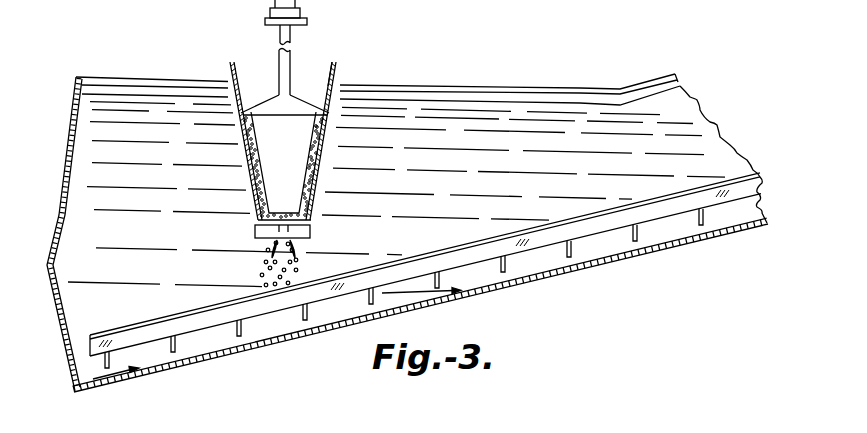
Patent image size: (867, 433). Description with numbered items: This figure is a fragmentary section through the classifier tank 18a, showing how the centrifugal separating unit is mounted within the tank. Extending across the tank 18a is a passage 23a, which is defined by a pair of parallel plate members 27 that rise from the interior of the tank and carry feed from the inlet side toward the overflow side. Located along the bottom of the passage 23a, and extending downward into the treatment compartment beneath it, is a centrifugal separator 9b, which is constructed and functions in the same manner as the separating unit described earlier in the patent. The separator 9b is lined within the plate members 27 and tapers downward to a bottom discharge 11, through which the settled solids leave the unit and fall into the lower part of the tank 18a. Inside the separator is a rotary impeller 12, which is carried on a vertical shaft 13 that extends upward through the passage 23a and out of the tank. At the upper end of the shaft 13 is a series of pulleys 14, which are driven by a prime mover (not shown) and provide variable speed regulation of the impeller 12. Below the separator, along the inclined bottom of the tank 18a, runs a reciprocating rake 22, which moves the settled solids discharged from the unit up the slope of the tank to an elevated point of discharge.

The centrifugal separator 9b is at (321, 160).
The bottom discharge 11 is at (312, 234).
The rotary impeller 12 is at (285, 121).
The shaft 13 is at (290, 62).
The pulleys 14 is at (306, 18).
The classifier tank 18a is at (67, 180).
The reciprocating rakes 22 is at (440, 256).
The passage 23a is at (316, 74).
The parallel plate members 27 is at (233, 62).